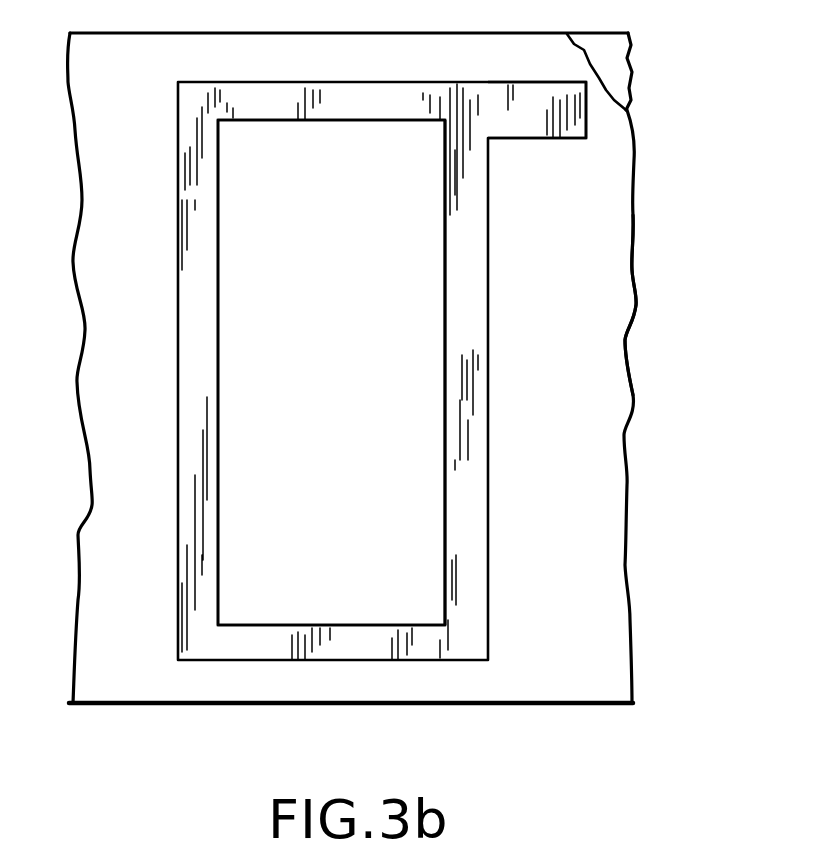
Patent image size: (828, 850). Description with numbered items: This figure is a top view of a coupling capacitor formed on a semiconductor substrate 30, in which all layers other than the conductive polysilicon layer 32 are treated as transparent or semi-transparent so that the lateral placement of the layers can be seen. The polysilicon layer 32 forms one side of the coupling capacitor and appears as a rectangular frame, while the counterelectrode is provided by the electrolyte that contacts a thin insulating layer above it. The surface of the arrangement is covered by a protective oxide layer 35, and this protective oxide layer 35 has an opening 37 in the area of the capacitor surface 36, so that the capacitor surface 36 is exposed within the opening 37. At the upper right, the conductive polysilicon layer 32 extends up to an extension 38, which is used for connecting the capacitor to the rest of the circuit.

The semiconductor substrate 30 is at (628, 78).
The polysilicon layer 32 is at (475, 436).
The protective oxide layer 35 is at (588, 330).
The capacitor surface 36 is at (421, 296).
The opening 37 is at (443, 398).
The extension 38 is at (543, 127).